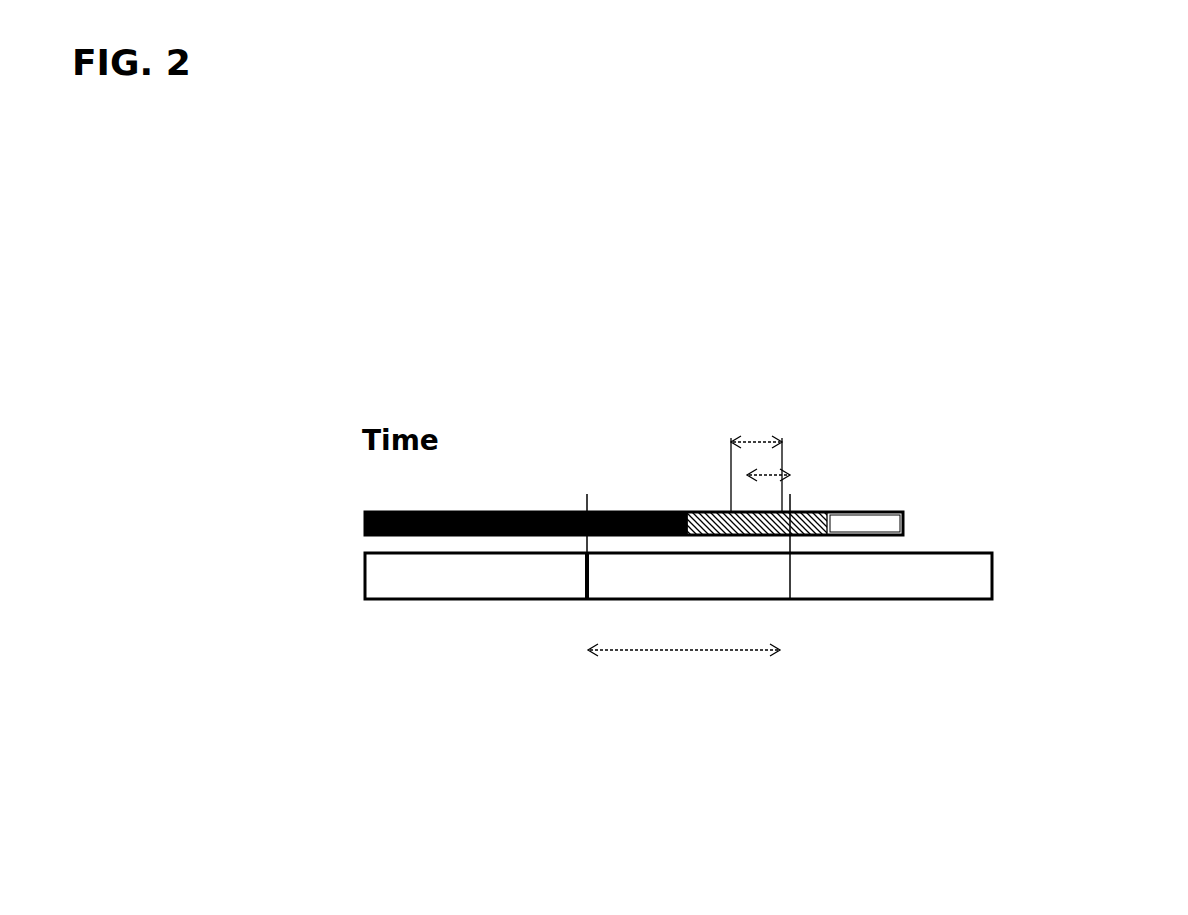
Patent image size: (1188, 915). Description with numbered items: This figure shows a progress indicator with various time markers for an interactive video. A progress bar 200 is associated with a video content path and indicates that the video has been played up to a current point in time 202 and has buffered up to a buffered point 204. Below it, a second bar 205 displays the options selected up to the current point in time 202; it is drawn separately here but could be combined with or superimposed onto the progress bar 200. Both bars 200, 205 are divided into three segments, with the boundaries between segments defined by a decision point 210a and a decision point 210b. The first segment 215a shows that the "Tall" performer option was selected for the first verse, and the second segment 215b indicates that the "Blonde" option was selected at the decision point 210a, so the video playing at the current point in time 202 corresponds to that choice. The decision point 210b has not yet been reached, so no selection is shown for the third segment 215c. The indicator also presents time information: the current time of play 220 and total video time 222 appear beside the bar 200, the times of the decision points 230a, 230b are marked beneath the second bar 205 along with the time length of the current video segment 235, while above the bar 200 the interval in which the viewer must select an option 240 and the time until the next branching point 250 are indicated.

The progress bar 200 is at (363, 523).
The current point in time 202 is at (681, 512).
The buffered point 204 is at (832, 511).
The second bar 205 is at (365, 578).
The decision point 210a is at (583, 497).
The decision point 210b is at (796, 510).
The first segment 215a is at (400, 602).
The second segment 215b is at (755, 602).
The third segment 215c is at (950, 600).
The current time of play 220 is at (940, 503).
The total video time 222 is at (1032, 489).
The time of decision point 230a is at (487, 708).
The time of decision point 230b is at (773, 694).
The time length of current video segment 235 is at (689, 706).
The option selection time interval 240 is at (736, 435).
The time until next branching point 250 is at (790, 454).